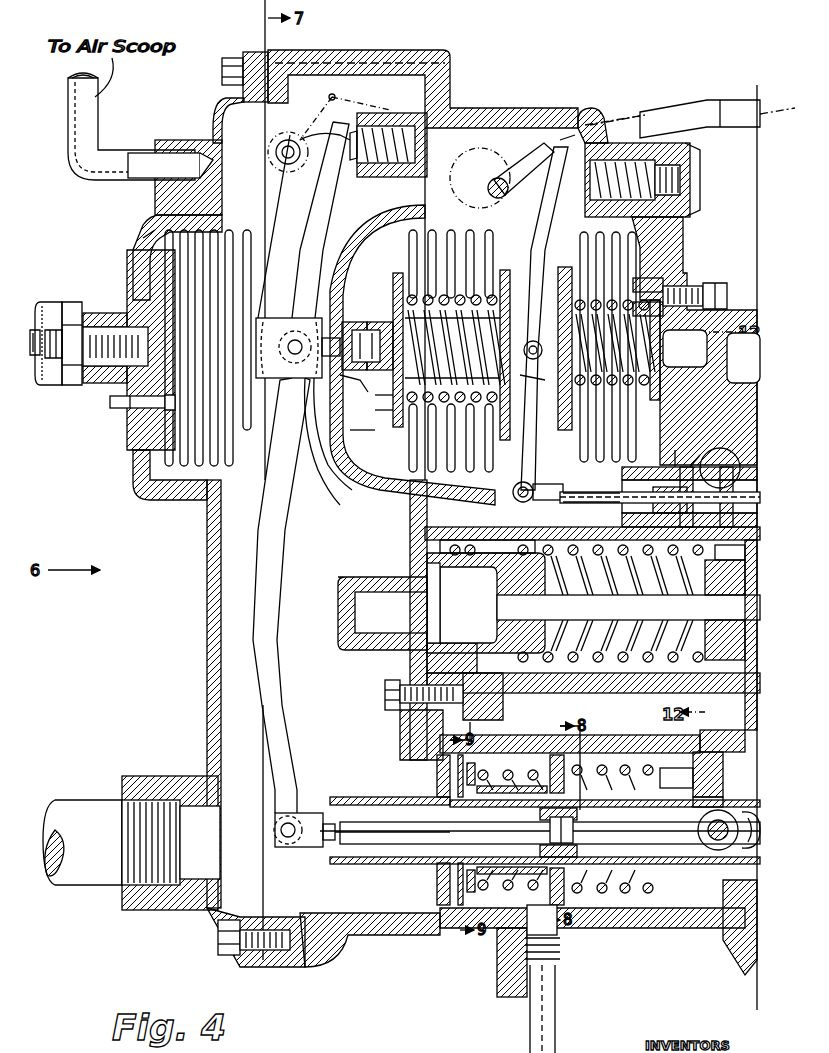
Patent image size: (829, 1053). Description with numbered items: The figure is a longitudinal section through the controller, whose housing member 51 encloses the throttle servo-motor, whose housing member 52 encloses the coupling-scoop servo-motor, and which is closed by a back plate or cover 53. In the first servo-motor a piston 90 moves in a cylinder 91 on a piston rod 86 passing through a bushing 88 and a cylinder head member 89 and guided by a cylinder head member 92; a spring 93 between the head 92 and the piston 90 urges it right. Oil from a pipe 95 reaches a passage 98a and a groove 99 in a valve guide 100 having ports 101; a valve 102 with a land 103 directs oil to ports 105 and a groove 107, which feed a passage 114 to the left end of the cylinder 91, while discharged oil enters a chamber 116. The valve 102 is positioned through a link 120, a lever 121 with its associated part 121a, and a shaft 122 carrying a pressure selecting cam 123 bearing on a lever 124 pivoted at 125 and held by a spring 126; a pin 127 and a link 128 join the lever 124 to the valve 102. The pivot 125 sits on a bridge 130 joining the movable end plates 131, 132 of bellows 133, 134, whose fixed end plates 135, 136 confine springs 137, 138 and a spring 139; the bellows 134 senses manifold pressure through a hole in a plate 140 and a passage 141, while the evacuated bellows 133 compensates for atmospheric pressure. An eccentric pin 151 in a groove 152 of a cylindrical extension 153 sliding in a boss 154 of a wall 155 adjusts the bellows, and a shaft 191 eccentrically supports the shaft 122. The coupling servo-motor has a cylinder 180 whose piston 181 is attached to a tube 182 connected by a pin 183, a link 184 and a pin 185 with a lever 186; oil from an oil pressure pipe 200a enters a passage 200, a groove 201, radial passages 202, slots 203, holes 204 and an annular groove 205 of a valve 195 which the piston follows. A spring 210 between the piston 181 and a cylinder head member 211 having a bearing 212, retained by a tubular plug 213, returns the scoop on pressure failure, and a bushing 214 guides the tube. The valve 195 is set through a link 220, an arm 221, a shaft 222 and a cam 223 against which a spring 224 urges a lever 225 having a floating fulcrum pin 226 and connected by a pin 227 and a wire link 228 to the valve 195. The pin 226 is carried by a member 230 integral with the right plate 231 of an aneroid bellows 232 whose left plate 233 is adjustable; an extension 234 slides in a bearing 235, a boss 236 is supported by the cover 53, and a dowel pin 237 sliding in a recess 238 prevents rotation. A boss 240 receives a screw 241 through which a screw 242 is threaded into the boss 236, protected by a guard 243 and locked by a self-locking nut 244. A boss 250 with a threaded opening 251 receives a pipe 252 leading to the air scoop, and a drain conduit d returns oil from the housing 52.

The housing member 51 is at (545, 112).
The housing member 52 is at (388, 50).
The back plate or cover 53 is at (133, 452).
The servo-motor piston rod 86 is at (750, 611).
The bushing 88 is at (745, 588).
The cylinder head member 89 is at (745, 636).
The piston 90 is at (745, 548).
The cylinder 91 is at (608, 693).
The cylinder head member 92 is at (486, 603).
The spring 93 is at (487, 545).
The pipe 95 is at (745, 556).
The passage 98a is at (705, 470).
The groove 99 is at (740, 466).
The valve guide 100 is at (740, 483).
The ports 101 is at (740, 495).
The valve 102 is at (745, 506).
The land 103 is at (620, 506).
The ports 105 is at (706, 453).
The groove 107 is at (687, 448).
The passage 114 is at (470, 545).
The chamber 116 is at (425, 490).
The link 120 is at (740, 108).
The lever 121 is at (508, 195).
The pipe axis 121a is at (592, 128).
The shaft 122 is at (496, 180).
The pressure selecting cam 123 is at (545, 147).
The lever 124 is at (538, 232).
The pivot 125 is at (539, 339).
The spring 126 is at (680, 182).
The pin 127 is at (535, 484).
The link 128 is at (591, 489).
The bridge 130 is at (546, 375).
The movable end plate 131 is at (505, 270).
The movable end plate 132 is at (564, 270).
The bellows 133 is at (450, 230).
The bellows 134 is at (580, 240).
The fixed end plate 135 is at (398, 272).
The fixed end plate 136 is at (668, 272).
The spring 137 is at (393, 400).
The spring 138 is at (393, 412).
The spring 139 is at (685, 348).
The plate 140 is at (708, 298).
The passage 141 is at (712, 360).
The eccentric pin 151 is at (360, 386).
The groove 152 is at (375, 322).
The cylindrical extension 153 is at (352, 322).
The boss 154 is at (360, 438).
The wall 155 is at (350, 246).
The cylinder 180 is at (617, 922).
The piston 181 is at (565, 831).
The tube 182 is at (660, 830).
The pin 183 is at (748, 845).
The link 184 is at (740, 815).
The pin 185 is at (755, 832).
The lever 186 is at (752, 860).
The shaft 191 is at (472, 158).
The valve 195 is at (575, 828).
The passage 200 is at (527, 945).
The oil pressure pipe 200a is at (530, 1030).
The groove 201 is at (522, 745).
The radial passages 202 is at (437, 772).
The slots 203 is at (490, 825).
The holes 204 is at (571, 829).
The annular groove 205 is at (470, 825).
The spring 210 is at (715, 768).
The cylinder head member 211 is at (700, 782).
The bearing 212 is at (725, 800).
The tubular plug 213 is at (740, 745).
The bushing 214 is at (420, 800).
The link 220 is at (386, 108).
The arm 221 is at (327, 102).
The shaft 222 is at (276, 155).
The cam 223 is at (280, 162).
The spring 224 is at (386, 178).
The lever 225 is at (322, 208).
The floating fulcrum pin 226 is at (296, 338).
The pin 227 is at (290, 848).
The wire link 228 is at (360, 836).
The member 230 is at (298, 378).
The right plate 231 is at (262, 246).
The aneroid bellows 232 is at (234, 232).
The left plate 233 is at (145, 248).
The extension 234 is at (340, 492).
The bearing 235 is at (352, 470).
The boss 236 is at (110, 402).
The dowel pin 237 is at (140, 320).
The recess 238 is at (130, 412).
The boss 240 is at (95, 312).
The screw 241 is at (42, 312).
The screw 242 is at (30, 335).
The guard 243 is at (58, 380).
The self-locking nut 244 is at (70, 372).
The boss 250 is at (165, 140).
The threaded opening 251 is at (180, 152).
The pipe 252 is at (68, 110).
The drain conduit d is at (88, 802).